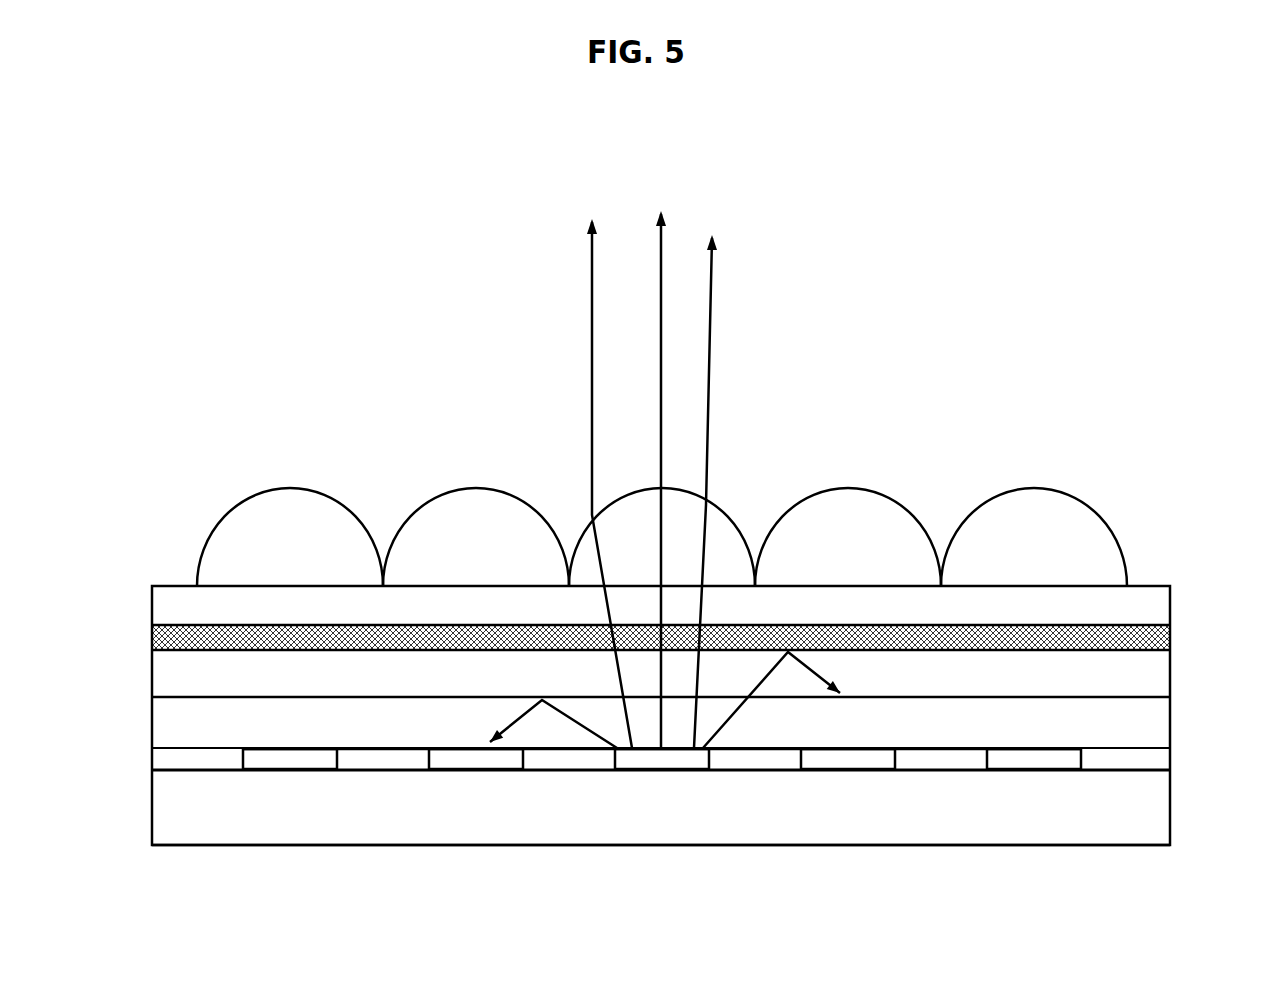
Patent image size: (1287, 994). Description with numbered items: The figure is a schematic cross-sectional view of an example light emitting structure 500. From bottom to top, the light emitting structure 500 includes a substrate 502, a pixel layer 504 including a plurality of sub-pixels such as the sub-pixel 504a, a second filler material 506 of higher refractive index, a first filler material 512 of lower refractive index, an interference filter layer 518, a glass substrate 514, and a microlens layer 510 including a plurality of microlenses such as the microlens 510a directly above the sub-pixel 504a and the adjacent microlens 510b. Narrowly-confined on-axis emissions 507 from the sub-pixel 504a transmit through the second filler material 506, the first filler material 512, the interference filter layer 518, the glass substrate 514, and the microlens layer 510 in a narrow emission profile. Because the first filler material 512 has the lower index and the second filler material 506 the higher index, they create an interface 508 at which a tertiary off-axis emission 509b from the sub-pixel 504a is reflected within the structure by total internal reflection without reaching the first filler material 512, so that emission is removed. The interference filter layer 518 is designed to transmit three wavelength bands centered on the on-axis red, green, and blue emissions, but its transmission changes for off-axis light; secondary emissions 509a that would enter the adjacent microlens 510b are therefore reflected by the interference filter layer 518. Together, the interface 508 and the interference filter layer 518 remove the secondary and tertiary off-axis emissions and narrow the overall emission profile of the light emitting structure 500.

The light emitting structure 500 is at (214, 284).
The substrate 502 is at (1138, 816).
The pixel layer 504 is at (390, 767).
The sub-pixel 504a is at (657, 760).
The second filler material 506 is at (1137, 741).
The on-axis emission profile 507 is at (577, 215).
The interface 508 is at (219, 698).
The secondary emissions 509a is at (758, 680).
The tertiary off-axis emission 509b is at (533, 707).
The microlens layer 510 is at (669, 484).
The microlens 510a is at (587, 563).
The adjacent microlens 510b is at (867, 562).
The first filler material 512 is at (1135, 681).
The glass substrate 514 is at (1130, 607).
The interference filter layer 518 is at (1130, 640).